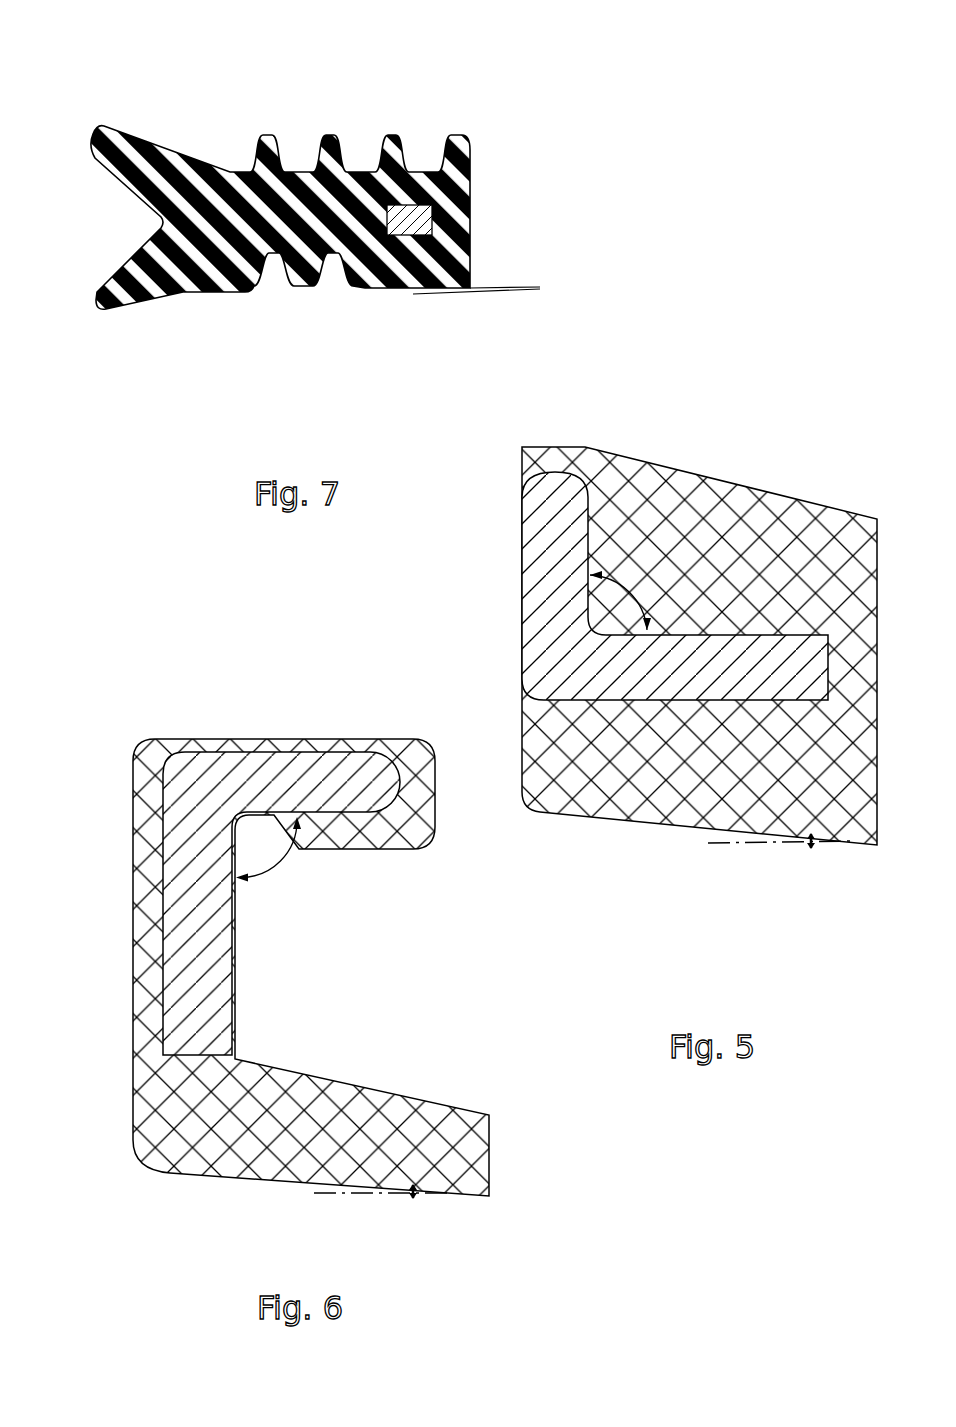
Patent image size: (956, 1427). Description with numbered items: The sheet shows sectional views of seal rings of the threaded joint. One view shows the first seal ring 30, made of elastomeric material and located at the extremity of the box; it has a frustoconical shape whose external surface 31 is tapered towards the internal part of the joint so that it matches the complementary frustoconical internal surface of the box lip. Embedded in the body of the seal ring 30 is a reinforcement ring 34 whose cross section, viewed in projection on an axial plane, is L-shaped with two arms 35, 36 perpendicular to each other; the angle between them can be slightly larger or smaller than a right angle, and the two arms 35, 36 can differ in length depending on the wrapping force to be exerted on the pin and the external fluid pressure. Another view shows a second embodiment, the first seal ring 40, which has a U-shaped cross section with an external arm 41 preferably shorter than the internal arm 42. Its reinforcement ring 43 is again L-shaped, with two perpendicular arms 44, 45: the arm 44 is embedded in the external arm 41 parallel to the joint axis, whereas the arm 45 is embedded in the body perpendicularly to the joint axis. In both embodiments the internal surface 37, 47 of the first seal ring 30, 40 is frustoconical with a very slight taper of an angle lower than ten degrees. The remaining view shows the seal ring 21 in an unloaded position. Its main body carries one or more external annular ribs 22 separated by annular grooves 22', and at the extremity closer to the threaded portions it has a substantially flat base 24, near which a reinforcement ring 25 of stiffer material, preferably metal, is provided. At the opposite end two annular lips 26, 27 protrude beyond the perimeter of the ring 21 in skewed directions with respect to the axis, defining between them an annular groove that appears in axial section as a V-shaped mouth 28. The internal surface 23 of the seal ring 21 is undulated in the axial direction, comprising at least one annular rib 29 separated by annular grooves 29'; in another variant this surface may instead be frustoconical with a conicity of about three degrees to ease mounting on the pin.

In FIG. 7, the seal ring 21 is at (540, 103).
In FIG. 7, the annular ribs 22 is at (369, 88).
In FIG. 7, the annular grooves 22' is at (371, 108).
In FIG. 7, the internal surface 23 is at (181, 293).
In FIG. 7, the base 24 is at (472, 177).
In FIG. 7, the reinforcement ring 25 is at (434, 216).
In FIG. 7, the annular lip 26 is at (100, 308).
In FIG. 7, the annular lip 27 is at (118, 128).
In FIG. 7, the V-shaped mouth 28 is at (150, 220).
In FIG. 7, the annular rib 29 is at (276, 330).
In FIG. 7, the annular grooves 29' is at (284, 335).
In FIG. 5, the first seal ring 30 is at (642, 858).
In FIG. 5, the external surface 31 is at (830, 480).
In FIG. 5, the reinforcement ring 34 is at (548, 645).
In FIG. 5, the arm 35 is at (783, 677).
In FIG. 5, the arm 36 is at (561, 502).
In FIG. 5, the internal surface 37 is at (575, 816).
In FIG. 6, the first seal ring 40 is at (106, 931).
In FIG. 6, the external arm 41 is at (415, 758).
In FIG. 6, the internal arm 42 is at (284, 1156).
In FIG. 6, the reinforcement ring 43 is at (191, 775).
In FIG. 6, the arm 44 is at (325, 767).
In FIG. 6, the arm 45 is at (210, 1008).
In FIG. 6, the internal surface 47 is at (198, 1173).